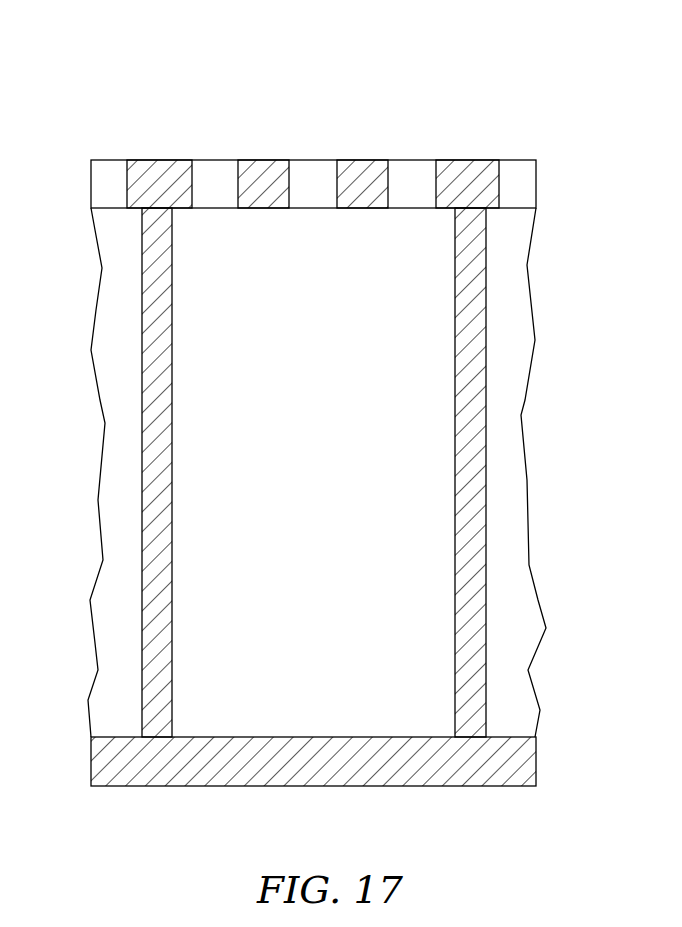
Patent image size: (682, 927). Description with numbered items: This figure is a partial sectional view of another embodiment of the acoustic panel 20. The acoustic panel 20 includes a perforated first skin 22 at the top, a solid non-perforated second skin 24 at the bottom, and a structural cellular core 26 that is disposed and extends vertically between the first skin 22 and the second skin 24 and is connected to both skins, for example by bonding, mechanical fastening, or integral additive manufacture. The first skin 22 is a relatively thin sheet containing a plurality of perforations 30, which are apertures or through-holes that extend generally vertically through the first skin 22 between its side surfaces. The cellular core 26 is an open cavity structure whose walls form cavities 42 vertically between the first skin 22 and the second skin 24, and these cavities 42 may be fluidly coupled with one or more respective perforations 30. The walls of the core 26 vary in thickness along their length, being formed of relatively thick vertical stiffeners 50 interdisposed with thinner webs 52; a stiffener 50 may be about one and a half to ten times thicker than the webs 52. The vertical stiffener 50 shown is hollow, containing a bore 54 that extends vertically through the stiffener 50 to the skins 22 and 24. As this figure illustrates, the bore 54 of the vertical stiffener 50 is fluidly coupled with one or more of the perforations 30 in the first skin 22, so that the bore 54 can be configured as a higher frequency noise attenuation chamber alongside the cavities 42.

The acoustic panel 20 is at (547, 83).
The first skin 22 is at (536, 183).
The second skin 24 is at (536, 770).
The cellular core 26 is at (538, 482).
The perforations 30 is at (112, 170).
The cavities 42 is at (108, 644).
The vertical stiffener 50 is at (478, 624).
The webs 52 is at (125, 283).
The bore 54 is at (335, 468).